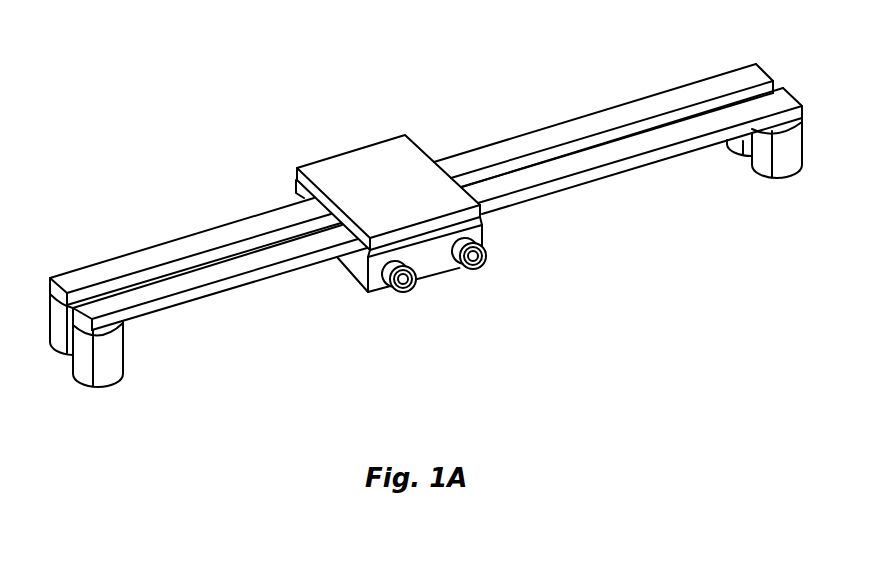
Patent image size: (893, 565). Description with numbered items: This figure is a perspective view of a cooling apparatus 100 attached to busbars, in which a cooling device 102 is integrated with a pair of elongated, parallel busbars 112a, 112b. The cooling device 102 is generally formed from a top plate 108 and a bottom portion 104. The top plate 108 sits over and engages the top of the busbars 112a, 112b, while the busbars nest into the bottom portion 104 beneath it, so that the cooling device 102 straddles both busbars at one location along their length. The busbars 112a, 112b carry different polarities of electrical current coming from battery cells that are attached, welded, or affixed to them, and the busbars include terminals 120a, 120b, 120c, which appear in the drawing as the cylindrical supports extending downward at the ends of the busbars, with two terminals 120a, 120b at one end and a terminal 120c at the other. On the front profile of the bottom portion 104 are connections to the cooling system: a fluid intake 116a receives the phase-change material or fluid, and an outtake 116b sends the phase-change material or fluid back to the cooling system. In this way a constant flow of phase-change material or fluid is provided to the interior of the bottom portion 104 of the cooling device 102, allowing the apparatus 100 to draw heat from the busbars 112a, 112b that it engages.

The cooling apparatus 100 is at (162, 84).
The cooling device 102 is at (428, 128).
The bottom portion 104 is at (490, 236).
The top plate 108 is at (347, 162).
The busbar 112a is at (581, 177).
The busbar 112b is at (613, 112).
The fluid intake 116a is at (473, 263).
The outtake 116b is at (405, 288).
The terminal 120a is at (50, 340).
The terminal 120b is at (121, 382).
The terminal 120c is at (780, 165).